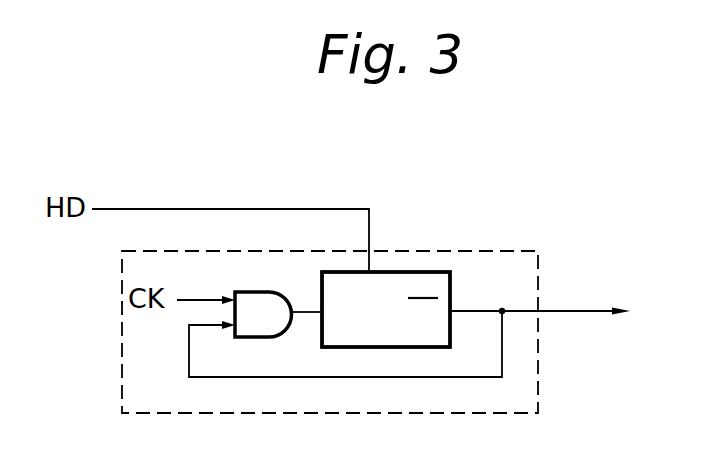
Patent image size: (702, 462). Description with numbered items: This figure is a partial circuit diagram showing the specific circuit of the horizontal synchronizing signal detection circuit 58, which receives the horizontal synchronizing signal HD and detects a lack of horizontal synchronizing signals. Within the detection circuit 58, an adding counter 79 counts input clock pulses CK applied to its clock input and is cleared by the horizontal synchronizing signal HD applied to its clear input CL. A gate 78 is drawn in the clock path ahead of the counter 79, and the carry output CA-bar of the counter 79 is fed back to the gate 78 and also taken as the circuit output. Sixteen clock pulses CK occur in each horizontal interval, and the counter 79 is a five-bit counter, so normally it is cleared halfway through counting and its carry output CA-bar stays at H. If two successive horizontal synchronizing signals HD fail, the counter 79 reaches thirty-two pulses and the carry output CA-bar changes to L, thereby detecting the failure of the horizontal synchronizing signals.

The horizontal synchronizing signal detection circuit 58 is at (536, 252).
The AND gate 78 is at (278, 292).
The adding counter 79 is at (477, 296).